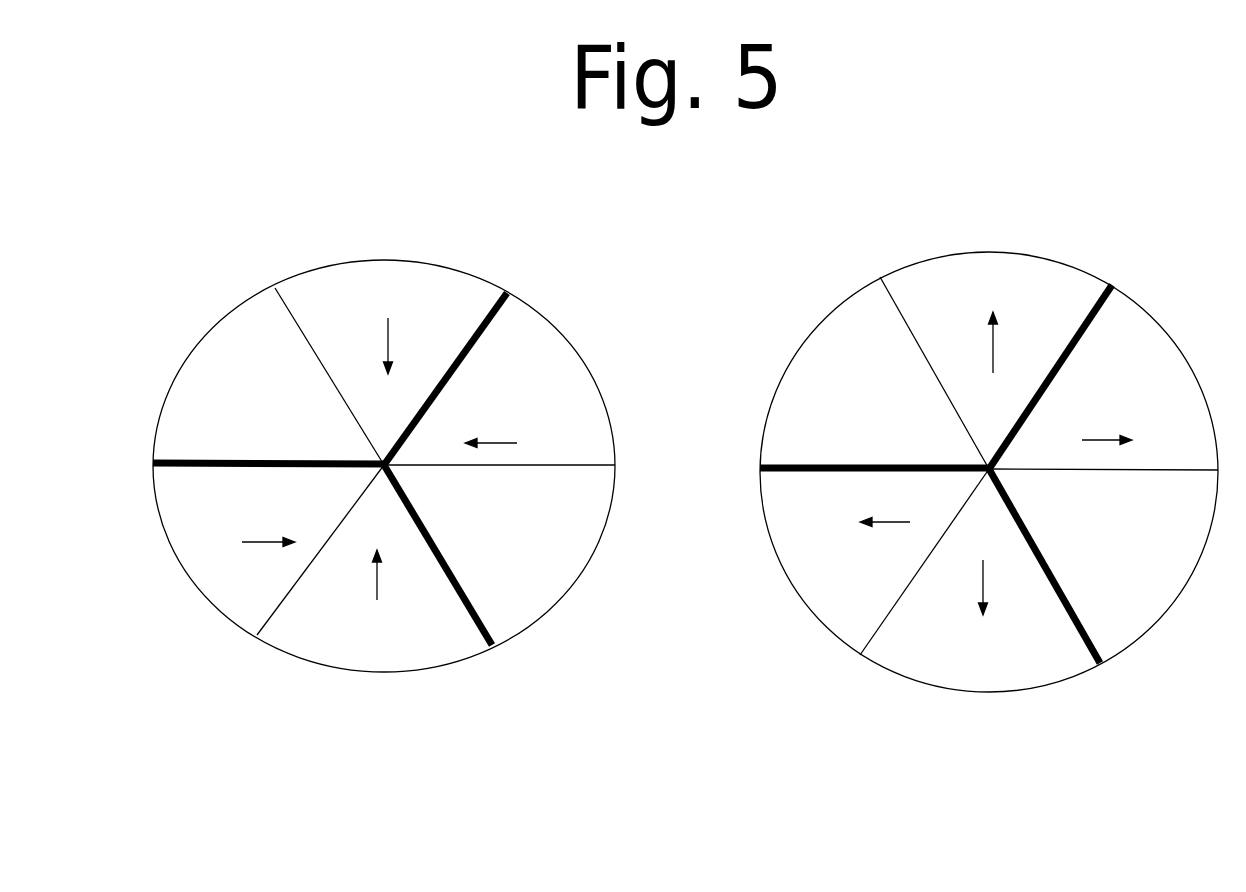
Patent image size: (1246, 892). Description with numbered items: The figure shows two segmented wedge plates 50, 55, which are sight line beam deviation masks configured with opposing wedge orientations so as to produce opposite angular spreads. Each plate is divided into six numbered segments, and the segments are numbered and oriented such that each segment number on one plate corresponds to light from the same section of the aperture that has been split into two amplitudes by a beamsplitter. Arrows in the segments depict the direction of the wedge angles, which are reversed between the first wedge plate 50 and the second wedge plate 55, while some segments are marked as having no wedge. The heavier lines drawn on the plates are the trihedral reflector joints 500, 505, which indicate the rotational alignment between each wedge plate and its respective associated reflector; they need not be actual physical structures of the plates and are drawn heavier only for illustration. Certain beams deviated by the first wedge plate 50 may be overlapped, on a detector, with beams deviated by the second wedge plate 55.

The first wedge plate 50 is at (387, 236).
The second wedge plate 55 is at (994, 228).
The trihedral reflector joint 500 is at (533, 651).
The trihedral reflector joint 505 is at (988, 615).